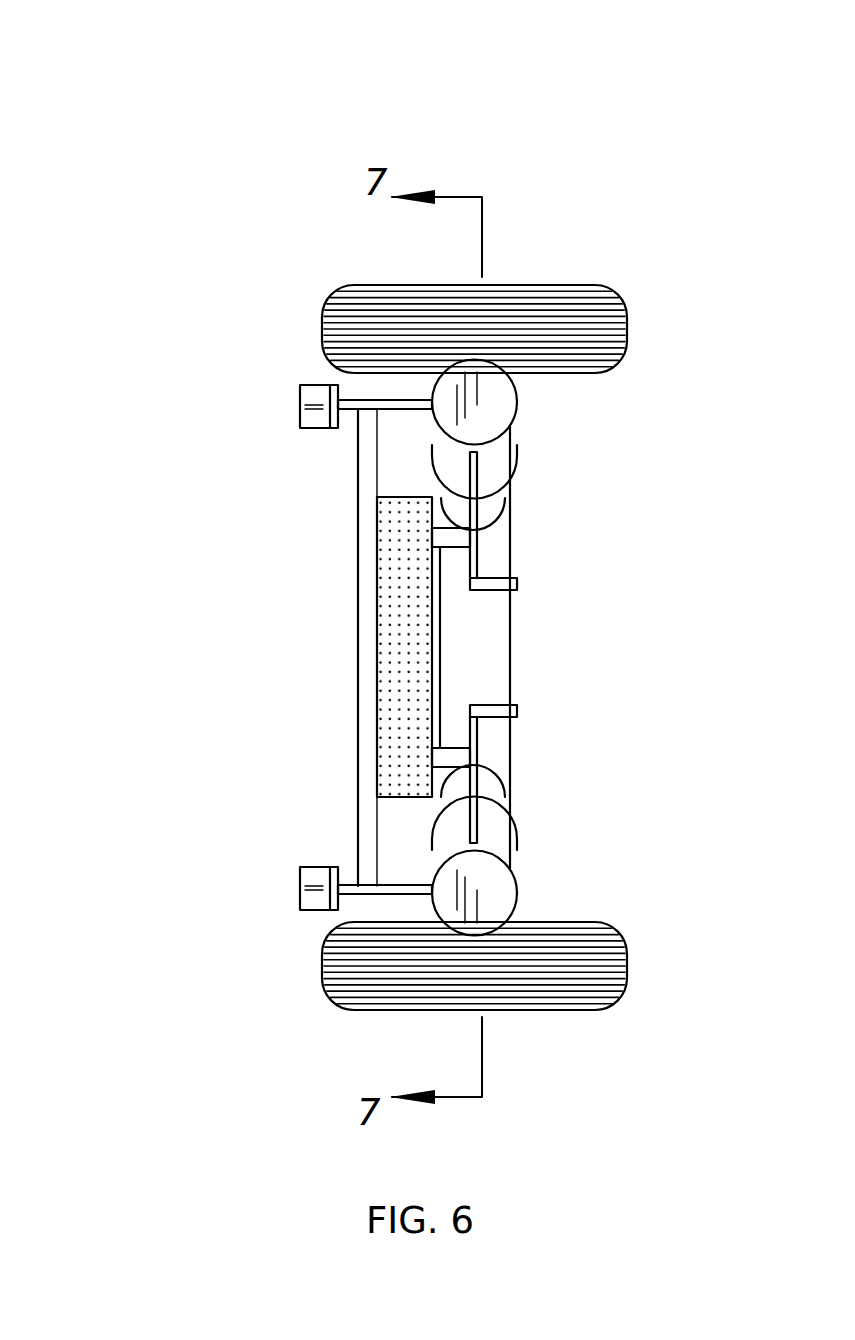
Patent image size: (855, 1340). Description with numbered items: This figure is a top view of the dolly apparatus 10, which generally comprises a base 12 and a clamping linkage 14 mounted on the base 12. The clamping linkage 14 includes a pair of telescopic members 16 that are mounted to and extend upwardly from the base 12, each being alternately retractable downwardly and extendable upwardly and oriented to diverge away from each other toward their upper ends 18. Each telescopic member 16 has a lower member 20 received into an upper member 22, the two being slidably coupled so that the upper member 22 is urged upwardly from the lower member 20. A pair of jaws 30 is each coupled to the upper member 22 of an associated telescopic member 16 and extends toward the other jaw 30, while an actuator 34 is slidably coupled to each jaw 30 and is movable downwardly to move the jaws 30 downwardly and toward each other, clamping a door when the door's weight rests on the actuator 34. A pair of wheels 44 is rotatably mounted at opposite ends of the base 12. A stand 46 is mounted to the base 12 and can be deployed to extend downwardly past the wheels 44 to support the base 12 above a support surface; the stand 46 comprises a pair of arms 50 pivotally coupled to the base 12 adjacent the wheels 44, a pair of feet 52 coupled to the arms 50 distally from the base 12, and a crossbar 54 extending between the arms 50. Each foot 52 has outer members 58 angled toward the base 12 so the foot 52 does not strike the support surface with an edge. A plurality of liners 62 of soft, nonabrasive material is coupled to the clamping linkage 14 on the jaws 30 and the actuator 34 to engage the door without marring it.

The dolly apparatus 10 is at (655, 120).
The base 12 is at (490, 652).
The clamping linkage 14 is at (652, 799).
The telescopic member 16 is at (572, 419).
The upper end 18 is at (467, 390).
The lower member 20 is at (497, 500).
The upper member 22 is at (455, 453).
The jaw 30 is at (480, 560).
The actuator 34 is at (378, 590).
The wheel 44 is at (548, 298).
The stand 46 is at (303, 790).
The arm 50 is at (398, 410).
The foot 52 is at (255, 410).
The crossbar 54 is at (358, 648).
The outer member 58 is at (317, 400).
The liner 62 is at (500, 606).